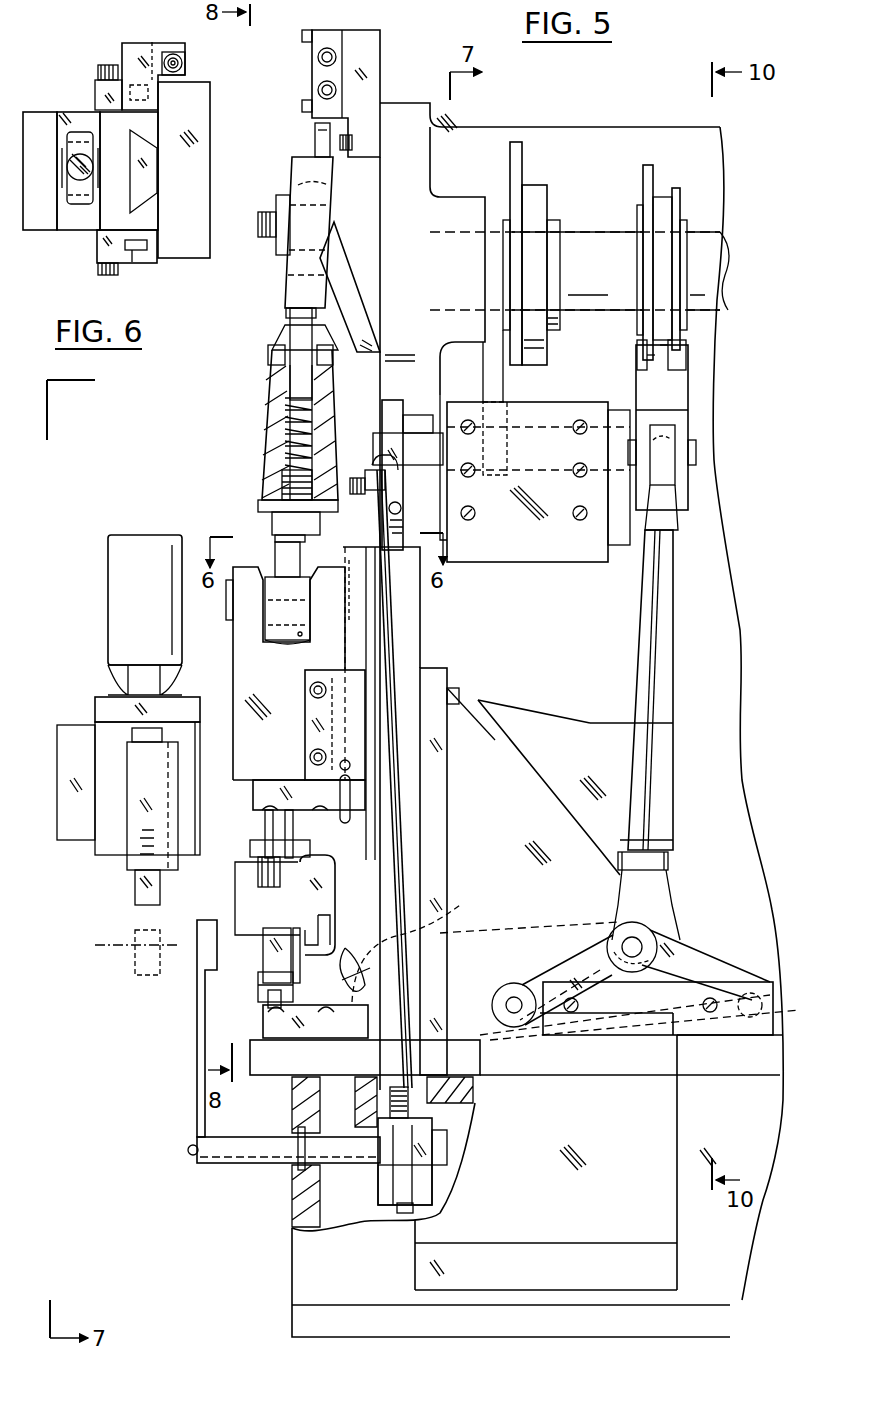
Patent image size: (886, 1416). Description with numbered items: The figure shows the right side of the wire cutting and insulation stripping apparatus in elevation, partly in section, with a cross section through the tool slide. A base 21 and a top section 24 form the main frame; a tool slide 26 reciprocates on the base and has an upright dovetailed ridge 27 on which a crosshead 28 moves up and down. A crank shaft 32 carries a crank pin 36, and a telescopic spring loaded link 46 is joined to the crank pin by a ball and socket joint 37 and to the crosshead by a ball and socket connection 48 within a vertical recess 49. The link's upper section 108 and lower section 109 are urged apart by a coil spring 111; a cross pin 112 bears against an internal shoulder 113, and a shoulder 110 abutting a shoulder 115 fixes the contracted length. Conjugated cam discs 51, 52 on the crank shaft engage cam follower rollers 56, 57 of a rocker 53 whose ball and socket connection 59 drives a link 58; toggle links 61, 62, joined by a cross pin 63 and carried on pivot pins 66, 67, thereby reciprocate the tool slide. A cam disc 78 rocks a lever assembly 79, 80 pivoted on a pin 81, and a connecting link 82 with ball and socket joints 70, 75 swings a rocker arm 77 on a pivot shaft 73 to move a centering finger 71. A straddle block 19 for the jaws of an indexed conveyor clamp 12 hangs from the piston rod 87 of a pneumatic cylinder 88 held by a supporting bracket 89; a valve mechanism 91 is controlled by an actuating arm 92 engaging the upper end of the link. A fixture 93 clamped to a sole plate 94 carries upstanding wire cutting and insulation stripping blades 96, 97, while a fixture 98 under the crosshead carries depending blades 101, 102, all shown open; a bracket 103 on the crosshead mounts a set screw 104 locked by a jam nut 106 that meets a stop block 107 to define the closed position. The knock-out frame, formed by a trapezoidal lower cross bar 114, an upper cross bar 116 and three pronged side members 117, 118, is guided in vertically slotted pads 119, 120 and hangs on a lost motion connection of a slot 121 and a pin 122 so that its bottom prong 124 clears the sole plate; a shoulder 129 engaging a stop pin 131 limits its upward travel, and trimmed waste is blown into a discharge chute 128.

In FIG. 5, the conveyor clamp 12 is at (128, 968).
In FIG. 5, the straddle block 19 is at (135, 892).
In FIG. 5, the base 21 is at (292, 1243).
In FIG. 5, the top section 24 is at (604, 127).
In FIG. 6, the tool slide 26 is at (214, 142).
In FIG. 5, the tool slide 26 is at (428, 670).
In FIG. 6, the dovetailed ridge 27 is at (150, 180).
In FIG. 5, the dovetailed ridge 27 is at (343, 552).
In FIG. 6, the crosshead 28 is at (38, 226).
In FIG. 5, the crosshead 28 is at (233, 658).
In FIG. 5, the crank shaft 32 is at (588, 237).
In FIG. 5, the crank pin 36 is at (276, 268).
In FIG. 5, the ball and socket joint 37 is at (290, 190).
In FIG. 5, the telescopic spring loaded link 46 is at (262, 418).
In FIG. 6, the ball and socket connection 48 is at (62, 196).
In FIG. 5, the ball and socket connection 48 is at (268, 578).
In FIG. 6, the vertical recess 49 is at (70, 226).
In FIG. 5, the vertical recess 49 is at (300, 638).
In FIG. 5, the conjugated cam disc 51 is at (680, 198).
In FIG. 5, the conjugated cam disc 52 is at (652, 175).
In FIG. 5, the rocker 53 is at (688, 408).
In FIG. 5, the cam follower roller 56 is at (636, 358).
In FIG. 5, the cam follower roller 57 is at (686, 372).
In FIG. 5, the link 58 is at (640, 640).
In FIG. 5, the ball and socket connection 59 is at (690, 465).
In FIG. 5, the toggle link 61 is at (546, 972).
In FIG. 5, the toggle link 62 is at (705, 963).
In FIG. 5, the cross pin 63 is at (648, 940).
In FIG. 5, the pivot pin 66 is at (512, 998).
In FIG. 5, the pivot pin 67 is at (765, 1006).
In FIG. 5, the ball and socket joint 70 is at (370, 470).
In FIG. 5, the centering finger 71 is at (197, 1022).
In FIG. 5, the pivot shaft 73 is at (447, 1148).
In FIG. 5, the ball and socket joint 75 is at (400, 1212).
In FIG. 5, the rocker arm 77 is at (432, 1185).
In FIG. 5, the cam disc 78 is at (510, 168).
In FIG. 5, the lever 79 is at (503, 392).
In FIG. 5, the lever 80 is at (390, 410).
In FIG. 5, the pin 81 is at (415, 433).
In FIG. 5, the connecting link 82 is at (390, 622).
In FIG. 5, the piston rod 87 is at (132, 730).
In FIG. 5, the pneumatic cylinder 88 is at (110, 633).
In FIG. 5, the supporting bracket 89 is at (95, 703).
In FIG. 5, the valve mechanism 91 is at (325, 32).
In FIG. 5, the actuating arm 92 is at (315, 133).
In FIG. 5, the fixture 93 is at (263, 1024).
In FIG. 5, the sole plate 94 is at (273, 1065).
In FIG. 5, the wire cutting blade 96 is at (304, 1023).
In FIG. 5, the insulation stripping blade 97 is at (268, 1000).
In FIG. 5, the fixture 98 is at (253, 793).
In FIG. 5, the wire cutting blade 101 is at (293, 830).
In FIG. 5, the insulation stripping blade 102 is at (265, 832).
In FIG. 6, the bracket 103 is at (122, 50).
In FIG. 6, the set screw 104 is at (185, 62).
In FIG. 6, the jam nut 106 is at (187, 67).
In FIG. 6, the stop block 107 is at (157, 62).
In FIG. 5, the upper section 108 is at (290, 388).
In FIG. 5, the lower section 109 is at (265, 450).
In FIG. 5, the shoulder 110 is at (286, 312).
In FIG. 5, the coil spring 111 is at (312, 420).
In FIG. 5, the cross pin 112 is at (268, 355).
In FIG. 5, the internal shoulder 113 is at (340, 295).
In FIG. 5, the lower cross bar 114 is at (263, 935).
In FIG. 5, the shoulder 115 is at (278, 335).
In FIG. 5, the upper cross bar 116 is at (258, 872).
In FIG. 6, the side member 117 is at (138, 252).
In FIG. 5, the side member 117 is at (332, 882).
In FIG. 6, the side member 118 is at (158, 104).
In FIG. 6, the slotted pad 119 is at (99, 242).
In FIG. 5, the slotted pad 119 is at (305, 710).
In FIG. 6, the slotted pad 120 is at (95, 98).
In FIG. 5, the slot 121 is at (345, 791).
In FIG. 5, the pin 122 is at (340, 766).
In FIG. 5, the bottom prong 124 is at (258, 980).
In FIG. 5, the discharge chute 128 is at (318, 935).
In FIG. 5, the shoulder 129 is at (350, 985).
In FIG. 5, the stop pin 131 is at (400, 925).